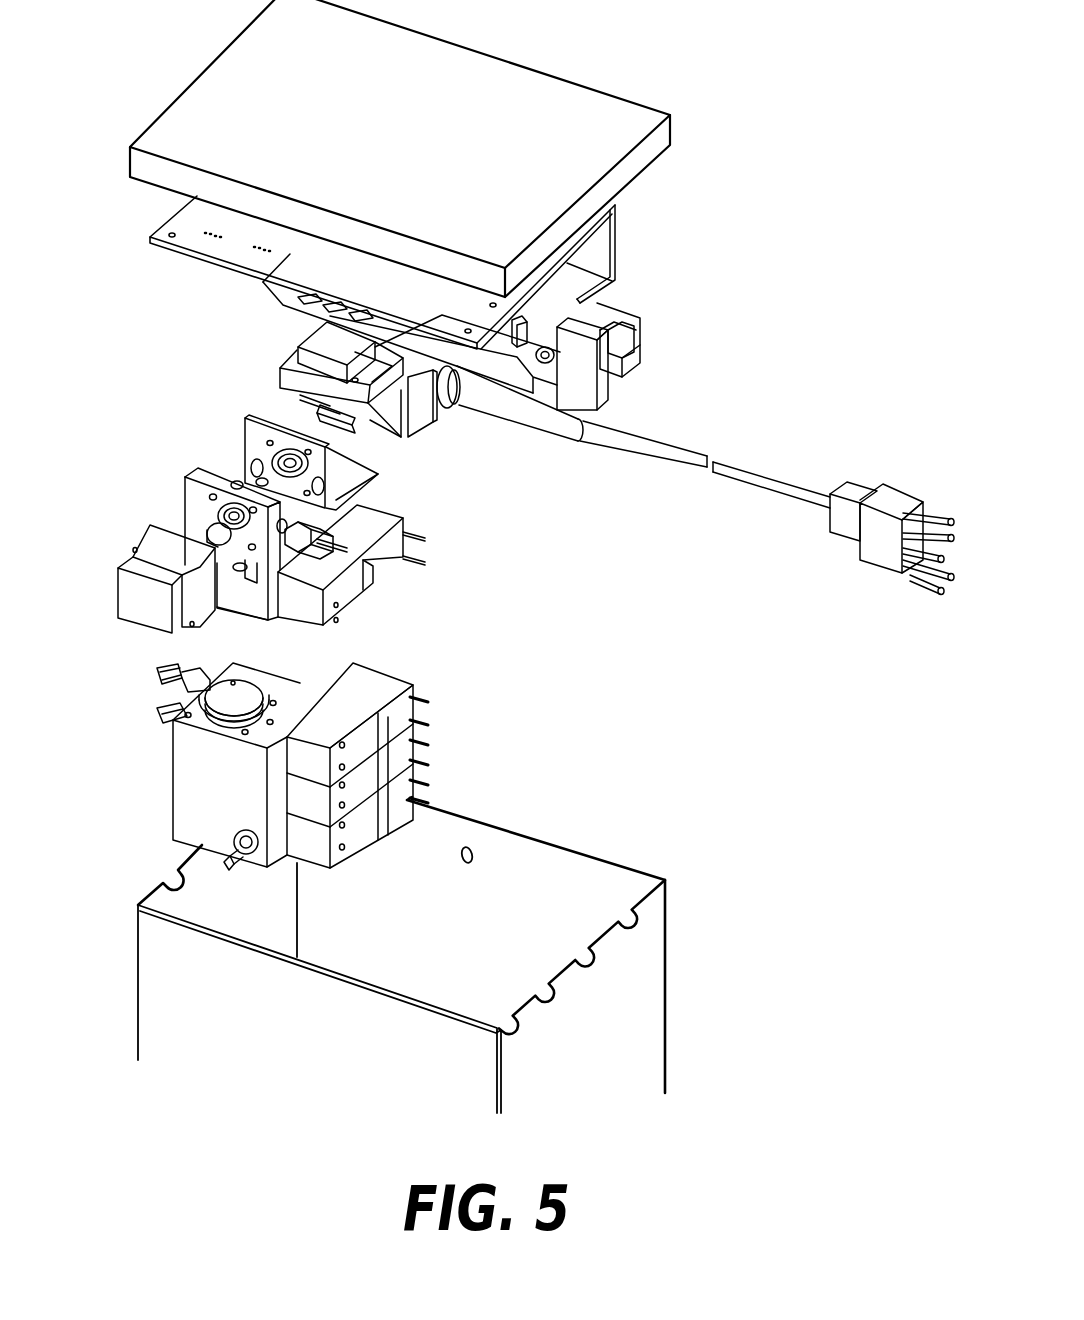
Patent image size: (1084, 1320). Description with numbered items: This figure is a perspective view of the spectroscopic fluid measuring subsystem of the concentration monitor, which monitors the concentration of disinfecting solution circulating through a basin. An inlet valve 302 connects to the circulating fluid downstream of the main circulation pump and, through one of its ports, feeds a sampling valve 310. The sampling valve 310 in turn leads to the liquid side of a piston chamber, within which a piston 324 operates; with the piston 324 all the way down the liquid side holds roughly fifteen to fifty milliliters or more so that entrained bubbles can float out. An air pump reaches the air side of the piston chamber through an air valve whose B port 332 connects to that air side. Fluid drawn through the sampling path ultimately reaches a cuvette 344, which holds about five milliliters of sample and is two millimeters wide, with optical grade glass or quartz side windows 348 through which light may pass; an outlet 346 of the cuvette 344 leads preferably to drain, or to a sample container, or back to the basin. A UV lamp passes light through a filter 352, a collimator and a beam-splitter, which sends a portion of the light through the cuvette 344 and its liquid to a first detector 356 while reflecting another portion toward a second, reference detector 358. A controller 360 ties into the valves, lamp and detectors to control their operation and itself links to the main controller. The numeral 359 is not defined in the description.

The controller 360 is at (152, 235).
The second, reference, detector 358 is at (296, 351).
The connector 359 is at (316, 417).
The outlet 346 is at (234, 482).
The cuvette 344 is at (192, 472).
The side windows 348 is at (207, 532).
The first detector 356 is at (118, 590).
The filter 352 is at (422, 407).
The sampling valve 310 is at (410, 538).
The piston 324 is at (263, 680).
The inlet valve 302 is at (428, 722).
The B port 332 is at (428, 760).